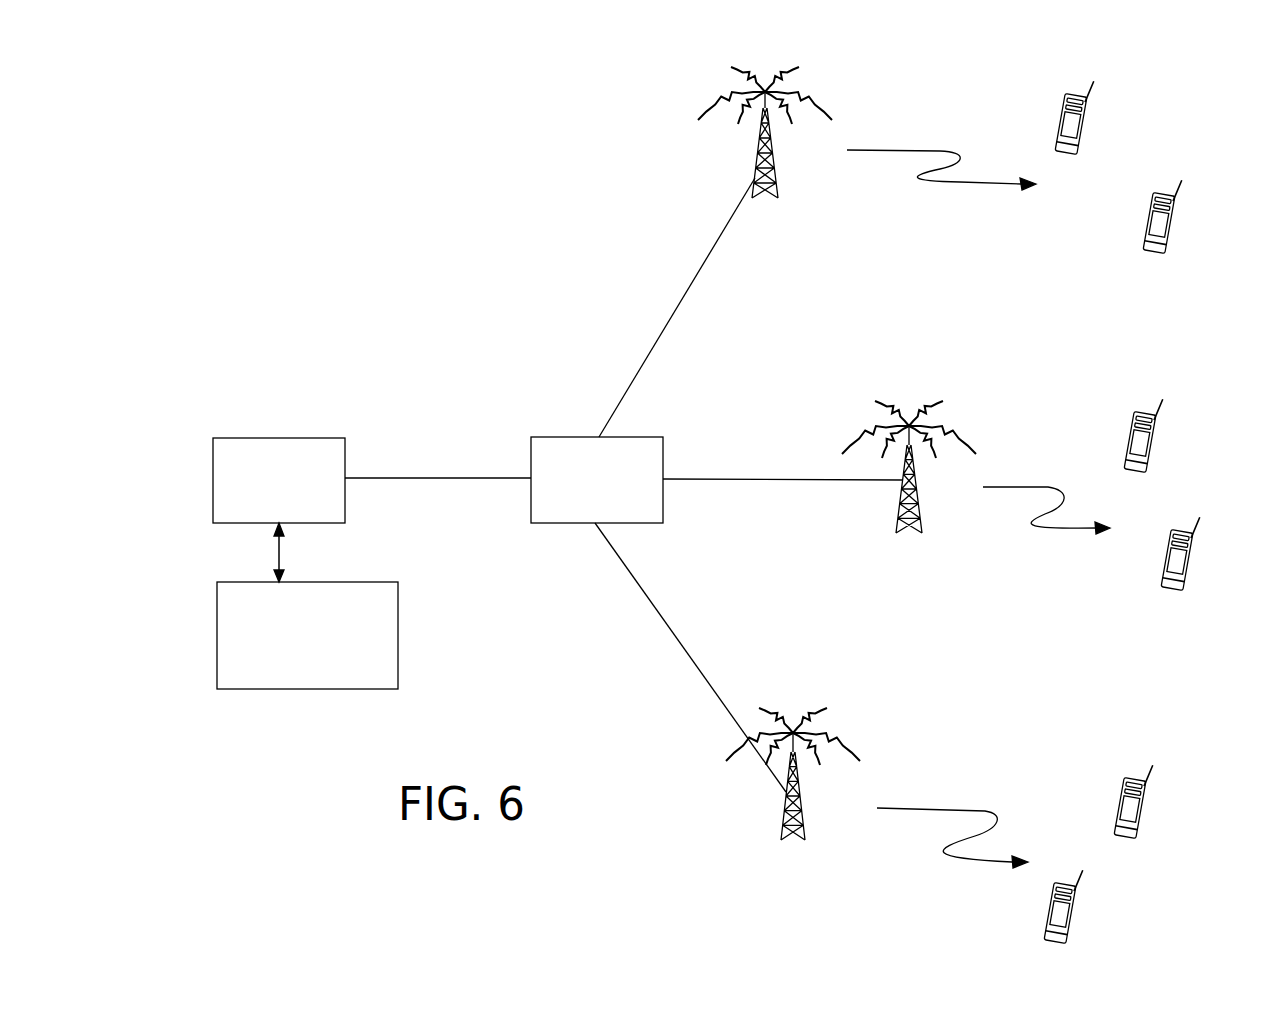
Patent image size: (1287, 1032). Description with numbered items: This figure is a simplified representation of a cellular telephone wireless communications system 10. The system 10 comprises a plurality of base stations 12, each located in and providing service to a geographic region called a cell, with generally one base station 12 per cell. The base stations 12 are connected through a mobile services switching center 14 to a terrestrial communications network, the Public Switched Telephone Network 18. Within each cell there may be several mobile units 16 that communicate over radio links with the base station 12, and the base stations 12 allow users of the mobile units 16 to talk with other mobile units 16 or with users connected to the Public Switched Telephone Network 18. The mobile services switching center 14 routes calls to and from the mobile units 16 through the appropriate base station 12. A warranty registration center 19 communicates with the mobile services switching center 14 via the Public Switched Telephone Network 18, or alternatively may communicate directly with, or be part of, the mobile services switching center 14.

The wireless communications system 10 is at (347, 208).
The base station 12 is at (777, 186).
The mobile services switching center 14 is at (645, 437).
The mobile unit 16 is at (1085, 132).
The Public Switched Telephone Network 18 is at (243, 437).
The warranty registration center 19 is at (398, 607).